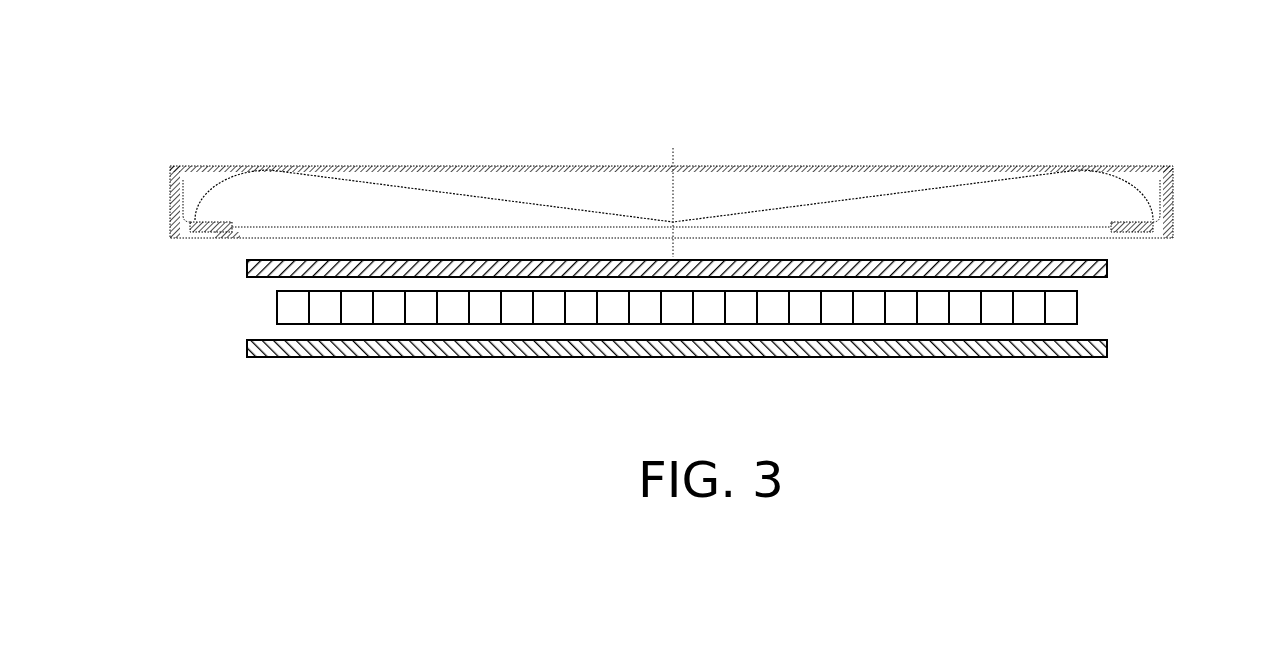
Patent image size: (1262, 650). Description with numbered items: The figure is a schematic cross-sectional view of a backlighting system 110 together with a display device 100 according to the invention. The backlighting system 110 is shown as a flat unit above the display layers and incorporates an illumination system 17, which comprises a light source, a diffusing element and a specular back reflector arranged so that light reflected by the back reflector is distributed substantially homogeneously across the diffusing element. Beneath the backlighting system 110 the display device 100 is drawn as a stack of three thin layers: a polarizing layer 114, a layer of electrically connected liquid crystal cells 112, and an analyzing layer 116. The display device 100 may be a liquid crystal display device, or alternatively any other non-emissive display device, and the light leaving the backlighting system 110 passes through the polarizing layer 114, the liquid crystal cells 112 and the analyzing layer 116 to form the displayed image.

The display device 100 is at (716, 199).
The backlighting system 110 is at (1181, 163).
The illumination system 17 is at (224, 247).
The polarizing layer 114 is at (1117, 267).
The liquid crystal cells 112 is at (1093, 307).
The analyzing layer 116 is at (1117, 350).